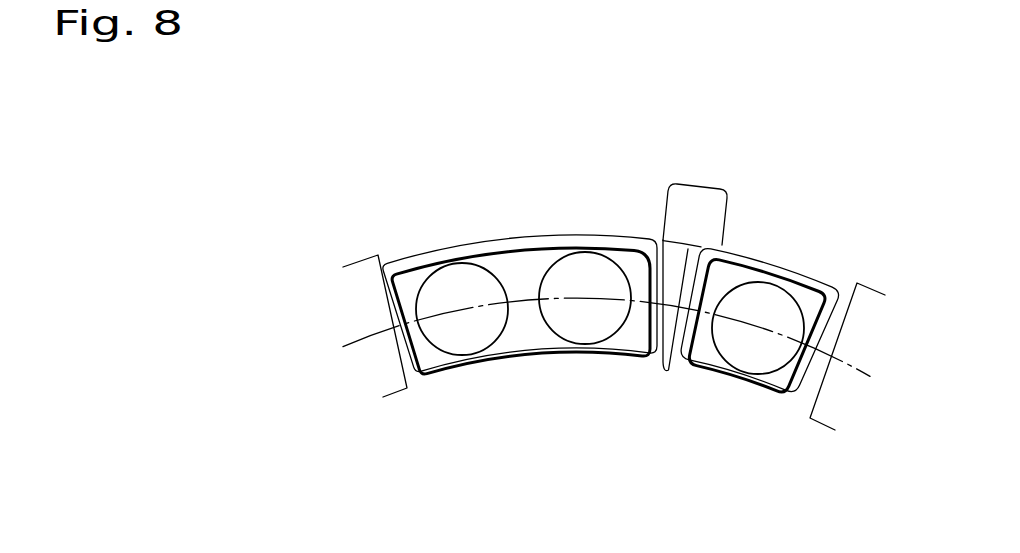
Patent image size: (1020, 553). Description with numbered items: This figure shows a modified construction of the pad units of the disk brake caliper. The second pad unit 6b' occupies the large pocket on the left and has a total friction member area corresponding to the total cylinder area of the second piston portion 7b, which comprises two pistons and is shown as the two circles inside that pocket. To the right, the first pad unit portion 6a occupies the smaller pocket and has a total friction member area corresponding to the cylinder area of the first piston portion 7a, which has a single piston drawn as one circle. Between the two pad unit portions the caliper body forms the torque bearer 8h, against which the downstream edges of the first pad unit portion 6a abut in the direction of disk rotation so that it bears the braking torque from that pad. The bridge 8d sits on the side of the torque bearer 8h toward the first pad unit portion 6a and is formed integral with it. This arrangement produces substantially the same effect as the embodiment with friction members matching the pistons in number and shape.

The second pad unit 6b' is at (520, 248).
The first pad unit portion 6a is at (810, 283).
The second piston portion 7b is at (532, 353).
The first piston portion 7a is at (778, 367).
The bridge 8d is at (713, 182).
The torque bearer 8h is at (662, 361).